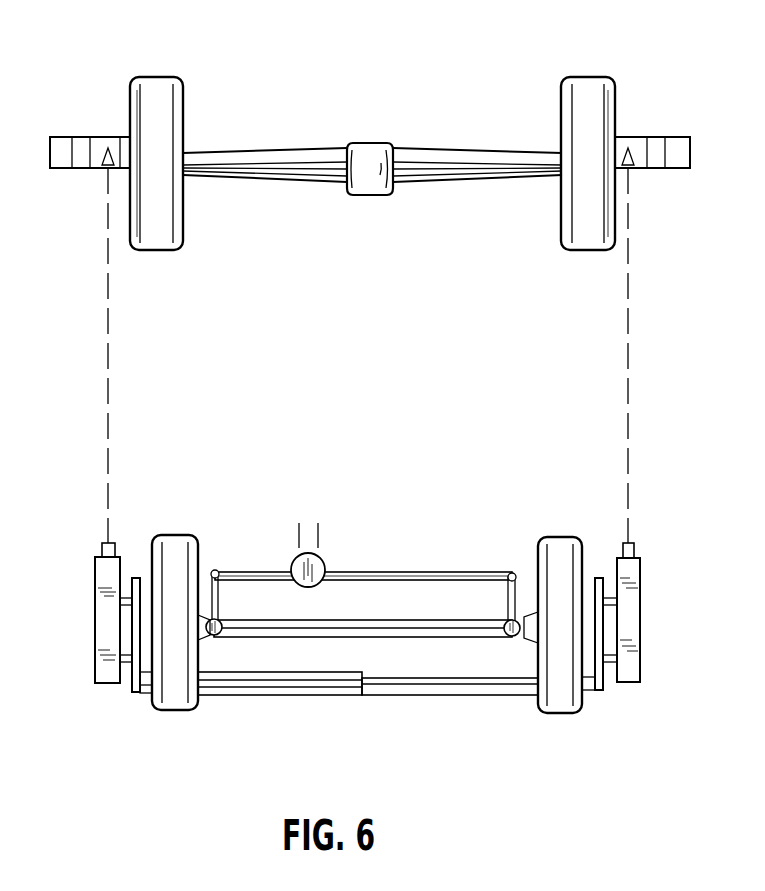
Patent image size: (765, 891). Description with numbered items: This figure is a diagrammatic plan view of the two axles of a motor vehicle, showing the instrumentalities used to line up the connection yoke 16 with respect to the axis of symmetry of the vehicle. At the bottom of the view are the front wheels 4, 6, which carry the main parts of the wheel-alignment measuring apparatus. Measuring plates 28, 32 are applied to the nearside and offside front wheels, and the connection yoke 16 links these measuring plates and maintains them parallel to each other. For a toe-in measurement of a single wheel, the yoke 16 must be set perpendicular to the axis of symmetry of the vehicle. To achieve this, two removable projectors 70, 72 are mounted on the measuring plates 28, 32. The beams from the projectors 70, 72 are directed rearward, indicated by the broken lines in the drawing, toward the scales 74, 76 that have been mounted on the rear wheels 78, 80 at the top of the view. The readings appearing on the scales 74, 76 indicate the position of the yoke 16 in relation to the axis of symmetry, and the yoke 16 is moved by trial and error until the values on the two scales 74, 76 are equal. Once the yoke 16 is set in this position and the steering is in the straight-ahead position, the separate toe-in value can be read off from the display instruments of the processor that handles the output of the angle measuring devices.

The nearside front wheel 4 is at (557, 700).
The offside front wheel 6 is at (177, 702).
The connection yoke 16 is at (347, 688).
The measuring plate 28 is at (602, 678).
The measuring plate 32 is at (133, 680).
The removable projector 70 is at (95, 601).
The removable projector 72 is at (633, 633).
The scale 74 is at (66, 148).
The scale 76 is at (660, 147).
The rear wheel 78 is at (158, 90).
The rear wheel 80 is at (583, 95).